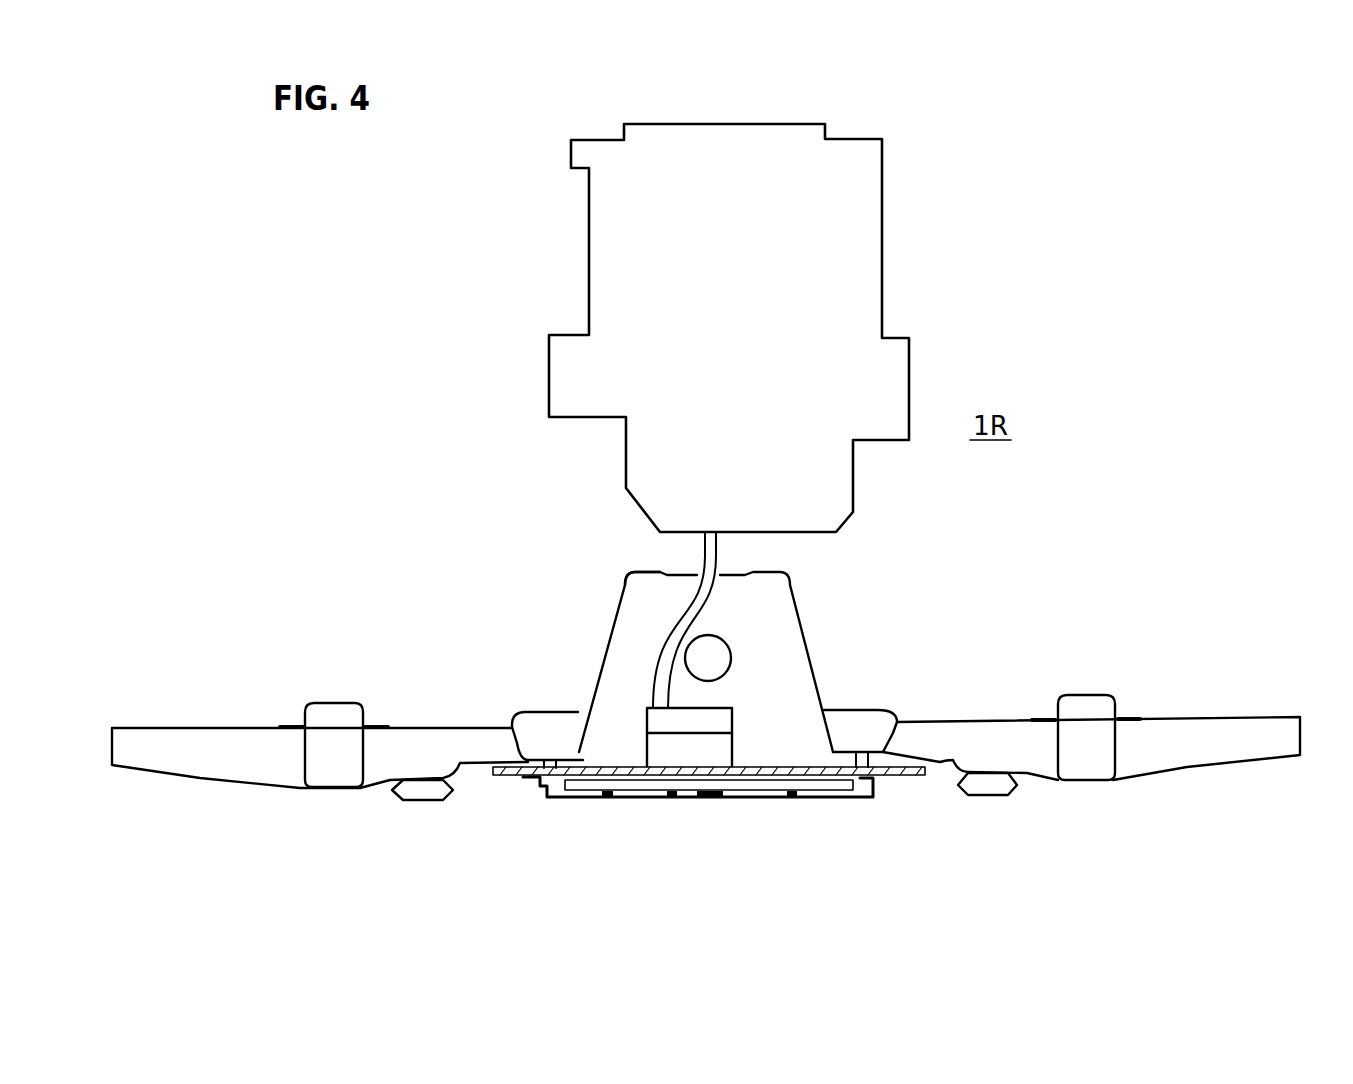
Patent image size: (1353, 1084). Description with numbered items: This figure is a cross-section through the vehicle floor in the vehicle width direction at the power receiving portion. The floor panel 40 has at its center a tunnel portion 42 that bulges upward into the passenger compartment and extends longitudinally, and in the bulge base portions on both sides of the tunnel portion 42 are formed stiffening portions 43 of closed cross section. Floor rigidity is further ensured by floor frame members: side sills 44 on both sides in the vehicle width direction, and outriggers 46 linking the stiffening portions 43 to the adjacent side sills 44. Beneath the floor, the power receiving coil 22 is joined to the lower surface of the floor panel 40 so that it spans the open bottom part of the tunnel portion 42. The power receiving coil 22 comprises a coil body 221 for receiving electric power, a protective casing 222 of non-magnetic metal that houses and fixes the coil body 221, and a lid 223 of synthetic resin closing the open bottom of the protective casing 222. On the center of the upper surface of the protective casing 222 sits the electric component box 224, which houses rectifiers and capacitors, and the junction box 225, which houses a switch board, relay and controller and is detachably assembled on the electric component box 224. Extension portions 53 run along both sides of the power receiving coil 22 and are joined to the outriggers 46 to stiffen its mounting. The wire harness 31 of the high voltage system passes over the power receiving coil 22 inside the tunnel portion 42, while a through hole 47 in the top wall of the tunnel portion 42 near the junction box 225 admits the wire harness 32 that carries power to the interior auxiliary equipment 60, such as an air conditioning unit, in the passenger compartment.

The interior auxiliary equipment 60 is at (583, 290).
The through hole 47 is at (716, 577).
The tunnel portion 42 is at (792, 597).
The wire harness 32 is at (674, 617).
The wire harness 31 is at (732, 649).
The stiffening portion 43 is at (550, 712).
The floor panel 40 is at (937, 715).
The side sill 44 is at (203, 780).
The extension portion 53 is at (417, 802).
The outrigger 46 is at (467, 767).
The power receiving coil 22 is at (670, 801).
The coil body 221 is at (722, 800).
The protective casing 222 is at (812, 764).
The lid 223 is at (577, 803).
The electric component box 224 is at (723, 743).
The junction box 225 is at (660, 718).